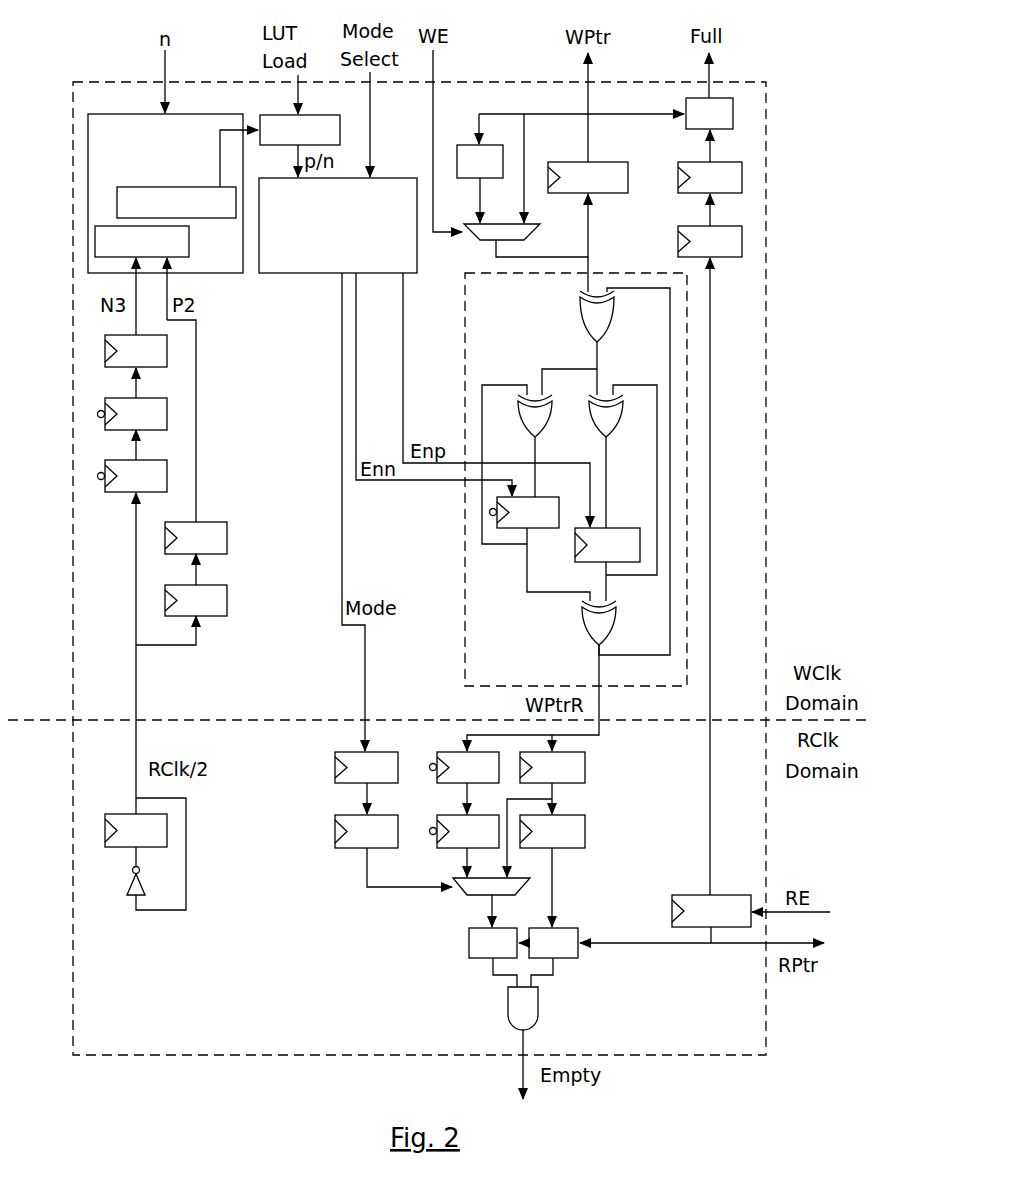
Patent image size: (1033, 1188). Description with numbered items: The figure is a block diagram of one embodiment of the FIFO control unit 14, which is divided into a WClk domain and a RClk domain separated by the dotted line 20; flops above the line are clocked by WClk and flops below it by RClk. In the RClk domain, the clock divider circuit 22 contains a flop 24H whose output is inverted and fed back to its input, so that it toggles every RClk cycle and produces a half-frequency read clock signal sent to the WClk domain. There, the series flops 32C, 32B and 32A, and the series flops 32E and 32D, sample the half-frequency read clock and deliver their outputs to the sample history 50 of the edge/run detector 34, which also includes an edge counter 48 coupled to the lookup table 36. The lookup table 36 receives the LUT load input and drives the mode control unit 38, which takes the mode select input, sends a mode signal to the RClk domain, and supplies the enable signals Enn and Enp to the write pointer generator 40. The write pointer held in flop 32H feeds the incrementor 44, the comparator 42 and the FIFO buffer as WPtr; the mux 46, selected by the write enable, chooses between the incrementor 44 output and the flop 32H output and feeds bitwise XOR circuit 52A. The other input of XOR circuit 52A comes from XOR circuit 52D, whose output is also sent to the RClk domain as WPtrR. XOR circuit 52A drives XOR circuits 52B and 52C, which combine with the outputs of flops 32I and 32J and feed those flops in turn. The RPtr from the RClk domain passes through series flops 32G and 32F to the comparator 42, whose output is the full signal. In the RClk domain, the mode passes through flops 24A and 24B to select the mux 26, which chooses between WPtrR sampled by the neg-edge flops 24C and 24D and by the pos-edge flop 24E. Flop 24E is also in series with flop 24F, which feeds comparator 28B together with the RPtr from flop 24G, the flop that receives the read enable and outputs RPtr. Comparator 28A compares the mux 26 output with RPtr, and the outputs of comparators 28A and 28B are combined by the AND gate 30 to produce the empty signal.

The FIFO control unit 14 is at (419, 568).
The dotted line 20 is at (266, 700).
The clock divider circuit 22 is at (103, 899).
The flop 24A is at (366, 767).
The flop 24B is at (366, 831).
The flop 24C is at (465, 767).
The flop 24D is at (465, 831).
The flop 24E is at (552, 767).
The flop 24F is at (552, 831).
The flop 24G is at (690, 893).
The flop 24H is at (136, 830).
The multiplexor 26 is at (463, 900).
The comparator 28A is at (468, 945).
The comparator 28B is at (580, 960).
The AND gate 30 is at (517, 1005).
The flop 32A is at (136, 351).
The flop 32B is at (133, 414).
The flop 32C is at (133, 476).
The flop 32D is at (196, 538).
The flop 32E is at (196, 600).
The flop 32F is at (710, 177).
The flop 32G is at (710, 241).
The flop 32H is at (630, 177).
The flop 32I is at (525, 512).
The flop 32J is at (607, 545).
The edge/run detector 34 is at (130, 193).
The lookup table 36 is at (273, 113).
The mode control unit 38 is at (338, 225).
The write pointer generator 40 is at (550, 479).
The comparator 42 is at (733, 113).
The incrementor 44 is at (479, 125).
The mux 46 is at (477, 240).
The edge counter 48 is at (117, 202).
The sample history 50 is at (95, 240).
The bitwise exclusive OR circuit 52A is at (598, 323).
The bitwise exclusive OR circuit 52B is at (530, 413).
The bitwise exclusive OR circuit 52C is at (608, 413).
The bitwise exclusive OR circuit 52D is at (593, 625).